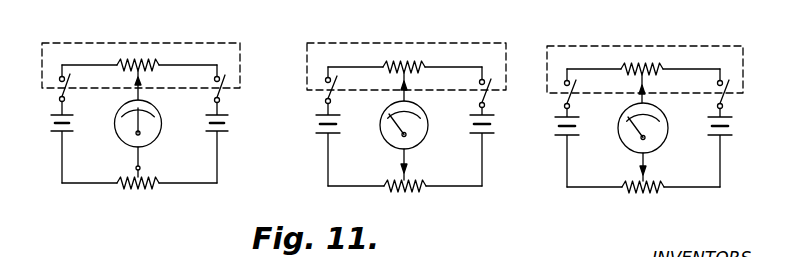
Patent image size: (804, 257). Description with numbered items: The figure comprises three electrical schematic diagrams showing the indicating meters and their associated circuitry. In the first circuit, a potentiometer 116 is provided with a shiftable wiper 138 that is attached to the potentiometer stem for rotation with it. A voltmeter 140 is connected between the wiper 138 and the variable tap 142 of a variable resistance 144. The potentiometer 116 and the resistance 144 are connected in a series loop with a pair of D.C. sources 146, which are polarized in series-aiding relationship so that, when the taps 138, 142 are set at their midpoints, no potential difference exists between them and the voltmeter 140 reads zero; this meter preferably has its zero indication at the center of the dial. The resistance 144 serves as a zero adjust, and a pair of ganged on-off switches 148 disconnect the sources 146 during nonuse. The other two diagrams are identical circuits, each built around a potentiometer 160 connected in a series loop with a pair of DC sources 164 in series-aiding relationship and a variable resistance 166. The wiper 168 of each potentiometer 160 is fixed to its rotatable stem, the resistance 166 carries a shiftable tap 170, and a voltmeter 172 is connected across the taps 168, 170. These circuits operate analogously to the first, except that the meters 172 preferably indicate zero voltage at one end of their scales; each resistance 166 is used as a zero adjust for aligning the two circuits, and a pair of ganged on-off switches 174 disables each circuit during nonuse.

The potentiometer 116 is at (137, 59).
The wiper 138 is at (141, 81).
The voltmeter 140 is at (158, 140).
The variable tap 142 is at (135, 168).
The variable resistance 144 is at (145, 191).
The D.C. sources 146 is at (57, 137).
The ganged on-off switches 148 is at (71, 88).
The potentiometer 160 is at (403, 60).
The DC sources 164 is at (323, 137).
The variable resistance 166 is at (413, 193).
The wiper 168 is at (408, 83).
The shiftable tap 170 is at (400, 170).
The voltmeter 172 is at (422, 142).
The ganged on-off switches 174 is at (339, 88).